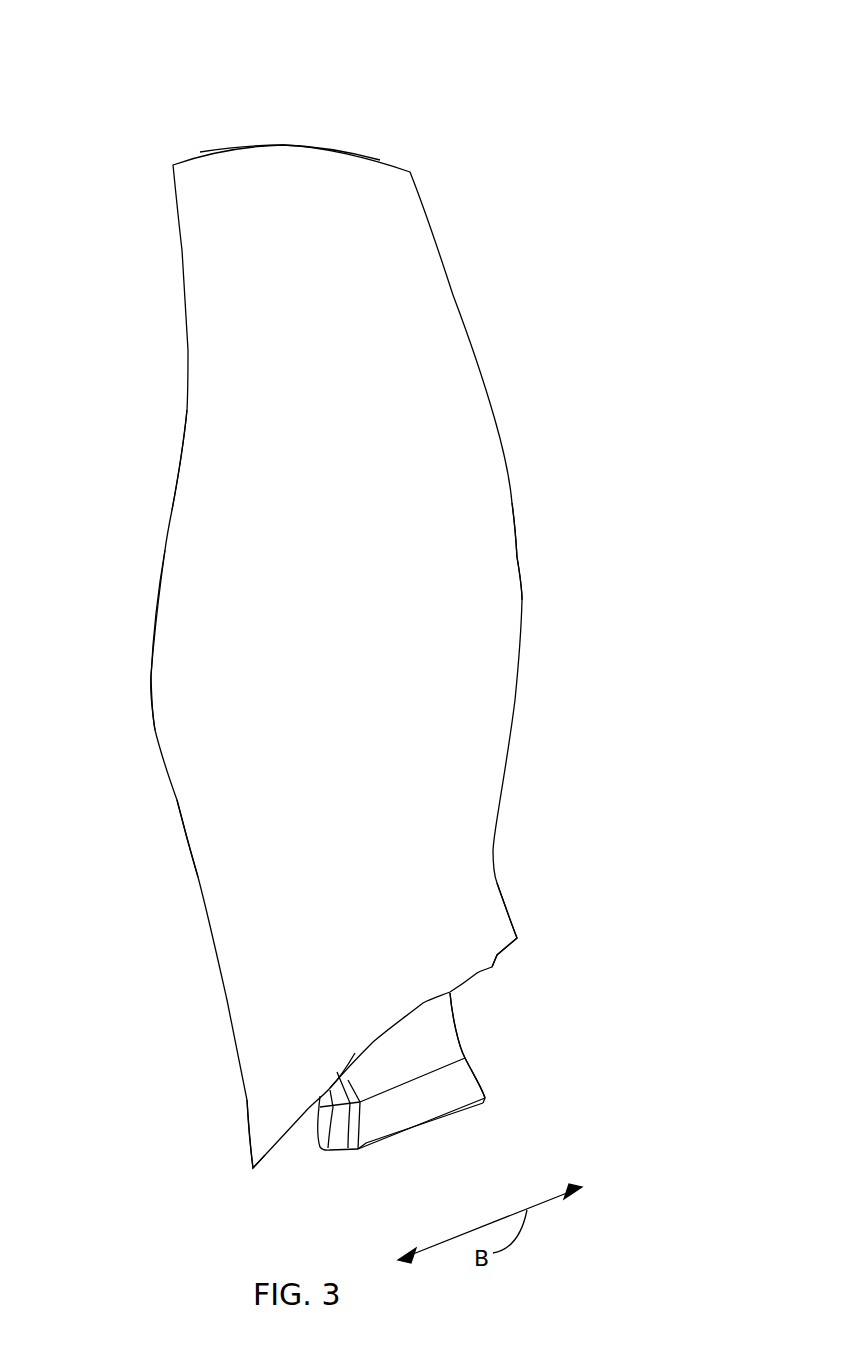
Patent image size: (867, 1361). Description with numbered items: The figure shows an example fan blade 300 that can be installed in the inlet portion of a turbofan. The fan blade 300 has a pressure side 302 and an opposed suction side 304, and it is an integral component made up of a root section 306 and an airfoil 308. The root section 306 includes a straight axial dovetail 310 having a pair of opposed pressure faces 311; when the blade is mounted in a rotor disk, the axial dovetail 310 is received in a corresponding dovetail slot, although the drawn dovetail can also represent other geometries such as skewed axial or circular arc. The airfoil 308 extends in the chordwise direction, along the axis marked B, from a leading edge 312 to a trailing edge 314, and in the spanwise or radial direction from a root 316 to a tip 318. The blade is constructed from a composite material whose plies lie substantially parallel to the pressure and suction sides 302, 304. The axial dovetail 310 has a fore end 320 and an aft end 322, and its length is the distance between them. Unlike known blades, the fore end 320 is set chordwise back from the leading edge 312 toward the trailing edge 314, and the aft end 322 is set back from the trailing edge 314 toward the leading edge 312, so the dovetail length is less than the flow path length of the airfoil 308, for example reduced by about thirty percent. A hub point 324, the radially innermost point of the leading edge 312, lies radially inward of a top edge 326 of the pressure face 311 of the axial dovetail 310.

The fan blade 300 is at (582, 63).
The pressure side 302 is at (354, 561).
The suction side 304 is at (207, 570).
The root section 306 is at (527, 1050).
The airfoil 308 is at (245, 832).
The axial dovetail 310 is at (452, 1118).
The pressure faces 311 is at (457, 998).
The leading edge 312 is at (152, 730).
The trailing edge 314 is at (517, 557).
The root 316 is at (492, 967).
The tip 318 is at (283, 145).
The fore end 320 is at (345, 1122).
The aft end 322 is at (485, 1085).
The hub point 324 is at (253, 1168).
The top edge 326 is at (377, 1087).